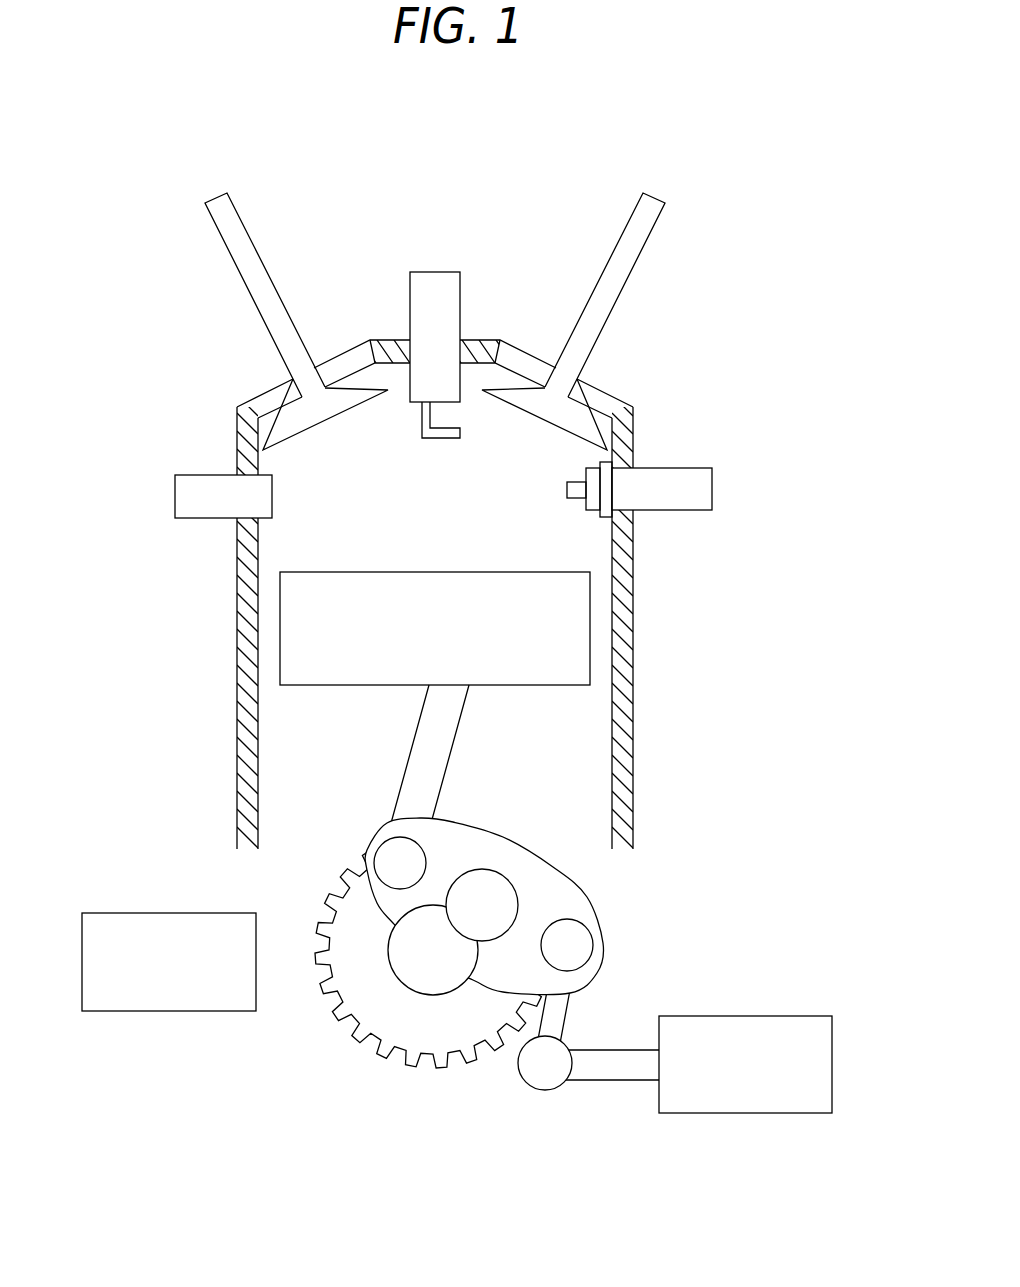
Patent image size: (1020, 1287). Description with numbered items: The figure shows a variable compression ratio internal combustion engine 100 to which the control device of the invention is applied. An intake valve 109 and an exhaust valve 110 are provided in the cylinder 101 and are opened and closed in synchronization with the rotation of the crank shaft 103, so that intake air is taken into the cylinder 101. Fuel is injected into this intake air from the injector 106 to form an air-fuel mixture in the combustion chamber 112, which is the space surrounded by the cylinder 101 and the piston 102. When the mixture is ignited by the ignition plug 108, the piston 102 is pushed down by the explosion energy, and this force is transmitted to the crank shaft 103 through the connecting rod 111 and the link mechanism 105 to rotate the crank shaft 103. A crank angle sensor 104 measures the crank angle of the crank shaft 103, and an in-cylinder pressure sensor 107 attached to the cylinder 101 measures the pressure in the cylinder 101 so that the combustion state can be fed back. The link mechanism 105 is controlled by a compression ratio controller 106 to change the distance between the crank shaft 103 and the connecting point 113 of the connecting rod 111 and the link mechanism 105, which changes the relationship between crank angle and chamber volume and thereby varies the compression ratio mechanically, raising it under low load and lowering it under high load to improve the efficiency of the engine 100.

The internal combustion engine 100 is at (752, 153).
The cylinder 101 is at (622, 567).
The piston 102 is at (567, 650).
The crank shaft 103 is at (417, 967).
The crank angle sensor 104 is at (118, 932).
The link mechanism 105 is at (545, 900).
The injector / compression ratio controller 106 is at (712, 489).
The in-cylinder pressure sensor 107 is at (173, 497).
The ignition plug 108 is at (432, 283).
The intake valve 109 is at (242, 250).
The exhaust valve 110 is at (628, 250).
The connecting rod 111 is at (433, 740).
The combustion chamber 112 is at (363, 475).
The connecting point 113 is at (400, 863).